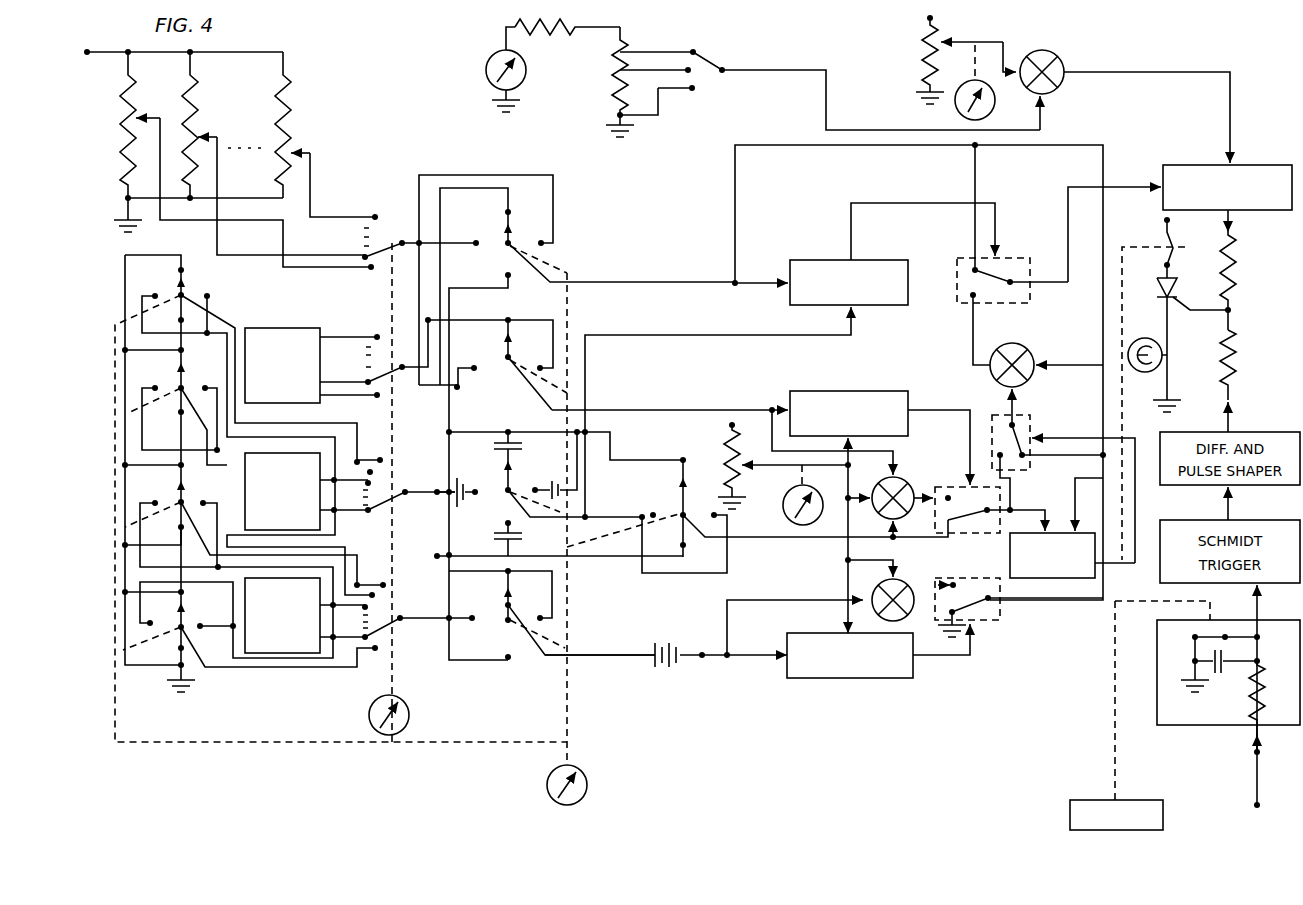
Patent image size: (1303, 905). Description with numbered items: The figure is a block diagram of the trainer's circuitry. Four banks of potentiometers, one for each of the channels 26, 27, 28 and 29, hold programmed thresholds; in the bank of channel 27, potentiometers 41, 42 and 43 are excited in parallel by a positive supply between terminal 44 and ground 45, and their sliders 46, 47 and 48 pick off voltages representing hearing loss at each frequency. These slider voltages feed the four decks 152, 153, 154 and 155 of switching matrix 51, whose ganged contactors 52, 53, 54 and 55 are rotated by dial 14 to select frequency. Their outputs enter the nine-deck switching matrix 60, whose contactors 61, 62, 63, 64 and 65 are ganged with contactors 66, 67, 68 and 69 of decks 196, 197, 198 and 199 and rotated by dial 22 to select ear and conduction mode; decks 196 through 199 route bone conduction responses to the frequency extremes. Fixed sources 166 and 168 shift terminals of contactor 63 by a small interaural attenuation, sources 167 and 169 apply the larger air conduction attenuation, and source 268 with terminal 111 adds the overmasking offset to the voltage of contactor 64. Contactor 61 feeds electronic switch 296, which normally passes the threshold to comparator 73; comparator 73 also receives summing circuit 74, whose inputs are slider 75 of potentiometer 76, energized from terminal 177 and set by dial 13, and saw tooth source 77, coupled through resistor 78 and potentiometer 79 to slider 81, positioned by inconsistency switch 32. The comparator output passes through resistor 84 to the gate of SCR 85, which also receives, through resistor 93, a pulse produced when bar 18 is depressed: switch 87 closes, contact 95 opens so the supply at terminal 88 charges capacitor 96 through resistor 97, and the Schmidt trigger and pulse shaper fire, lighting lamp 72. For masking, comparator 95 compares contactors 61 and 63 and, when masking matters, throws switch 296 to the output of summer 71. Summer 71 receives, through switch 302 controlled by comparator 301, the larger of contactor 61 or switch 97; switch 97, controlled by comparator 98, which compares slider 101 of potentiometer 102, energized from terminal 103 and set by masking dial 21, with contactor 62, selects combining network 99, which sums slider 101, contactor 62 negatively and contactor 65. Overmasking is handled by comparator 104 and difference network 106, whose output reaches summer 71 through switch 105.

The terminal 44 is at (82, 58).
The channel 27 is at (300, 62).
The potentiometer 41 is at (122, 140).
The potentiometer 42 is at (198, 99).
The potentiometer 43 is at (296, 96).
The slider 46 is at (147, 117).
The slider 47 is at (208, 137).
The slider 48 is at (300, 152).
The ground 45 is at (126, 200).
The four deck switching matrix 51 is at (350, 188).
The deck 152 is at (355, 238).
The contactor 52 is at (396, 240).
The second switching matrix 60 is at (512, 168).
The contactor 61 is at (504, 228).
The saw tooth voltage source 77 is at (486, 76).
The dropping resistor 78 is at (562, 35).
The potentiometer 79 is at (612, 108).
The three position switch 32 is at (727, 62).
The slider 81 is at (713, 72).
The potentiometer 76 is at (922, 55).
The terminal 177 is at (945, 18).
The slider 75 is at (993, 42).
The summing circuit 74 is at (1062, 58).
The dial 13 is at (996, 105).
The comparator 73 is at (1262, 166).
The resistor 84 is at (1240, 268).
The decoupling resistor 93 is at (1240, 358).
The switch 87 is at (1178, 250).
The silicon controlled rectifier 85 is at (1166, 288).
The indicator lamp 72 is at (1138, 340).
The comparator 95 is at (902, 260).
The comparator 98 is at (880, 390).
The two state electronic switch 296 is at (1005, 258).
The contactor 69 is at (188, 292).
The deck 199 is at (216, 300).
The deck 198 is at (147, 380).
The contactor 68 is at (190, 385).
The deck 197 is at (147, 490).
The contactor 67 is at (188, 495).
The contactor 66 is at (188, 618).
The deck 196 is at (203, 640).
The channel 26 is at (312, 365).
The channel 29 is at (309, 491).
The channel 28 is at (306, 615).
The deck 153 is at (352, 348).
The contactor 53 is at (398, 375).
The deck 154 is at (373, 446).
The contactor 54 is at (392, 490).
The contactor 55 is at (392, 628).
The deck 155 is at (372, 656).
The contactor 62 is at (504, 350).
The fixed D.C. source 166 is at (509, 440).
The contactor 63 is at (504, 480).
The fixed D.C. voltage source 167 is at (553, 483).
The fixed D.C. voltage source 169 is at (466, 512).
The fixed D.C. source 168 is at (522, 536).
The contactor 64 is at (504, 606).
The contactor 65 is at (680, 508).
The terminal 103 is at (730, 427).
The potentiometer 102 is at (730, 462).
The slider 101 is at (795, 470).
The control dial 21 is at (784, 510).
The linear combining network 99 is at (905, 480).
The two position electronic switch 97 is at (945, 487).
The summer 71 is at (1030, 352).
The two position electronic switch 302 is at (990, 425).
The comparator 301 is at (1072, 580).
The fixed D.C. source 268 is at (672, 668).
The terminal 111 is at (705, 655).
The comparator 104 is at (870, 680).
The difference network 106 is at (886, 618).
The switch 105 is at (956, 578).
The terminal 88 is at (1255, 805).
The capacitor 96 is at (1222, 680).
The bar 18 is at (1140, 715).
The dial 14 is at (410, 712).
The detented dial 22 is at (588, 785).